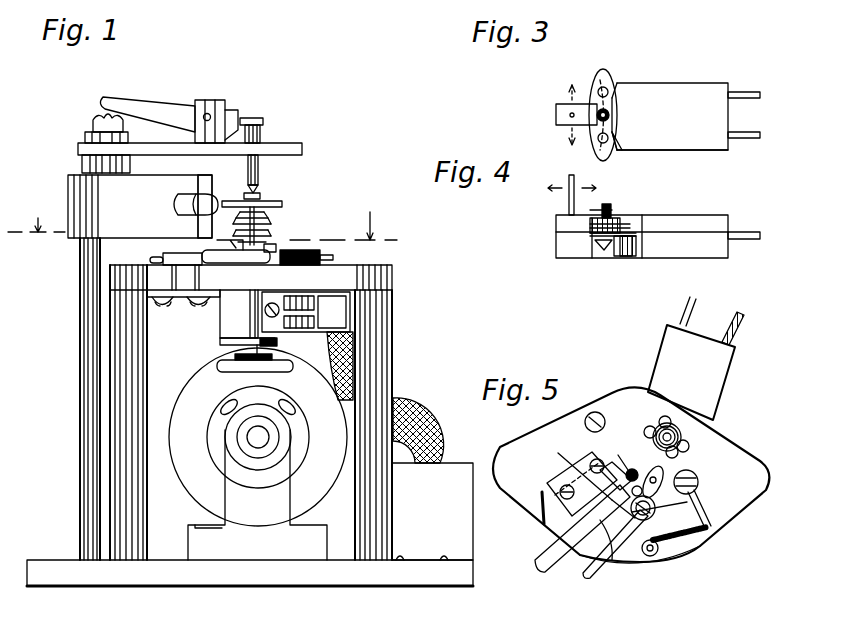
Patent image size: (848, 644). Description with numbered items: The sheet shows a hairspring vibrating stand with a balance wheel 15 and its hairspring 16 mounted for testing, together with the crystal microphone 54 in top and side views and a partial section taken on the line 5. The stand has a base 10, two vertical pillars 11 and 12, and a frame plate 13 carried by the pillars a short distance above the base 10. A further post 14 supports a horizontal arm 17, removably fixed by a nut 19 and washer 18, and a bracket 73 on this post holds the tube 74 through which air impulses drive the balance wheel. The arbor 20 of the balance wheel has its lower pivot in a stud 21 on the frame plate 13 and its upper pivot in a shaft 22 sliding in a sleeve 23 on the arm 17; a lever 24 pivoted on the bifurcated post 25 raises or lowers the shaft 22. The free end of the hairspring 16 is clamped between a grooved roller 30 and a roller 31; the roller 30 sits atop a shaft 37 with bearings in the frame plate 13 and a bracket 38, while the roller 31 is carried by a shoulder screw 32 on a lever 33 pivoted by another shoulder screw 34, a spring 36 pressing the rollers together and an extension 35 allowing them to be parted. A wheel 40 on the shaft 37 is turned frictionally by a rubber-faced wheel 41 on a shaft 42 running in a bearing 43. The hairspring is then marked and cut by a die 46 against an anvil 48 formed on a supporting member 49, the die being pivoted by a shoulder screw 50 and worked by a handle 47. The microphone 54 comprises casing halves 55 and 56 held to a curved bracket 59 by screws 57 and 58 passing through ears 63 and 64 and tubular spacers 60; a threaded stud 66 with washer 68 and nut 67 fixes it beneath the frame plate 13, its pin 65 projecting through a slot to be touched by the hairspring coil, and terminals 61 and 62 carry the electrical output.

In FIG. 1, the section line 5 is at (202, 217).
In FIG. 1, the base 10 is at (313, 580).
In FIG. 1, the vertical pillar 11 is at (140, 402).
In FIG. 1, the vertical pillar 12 is at (378, 418).
In FIG. 1, the frame plate 13 is at (393, 278).
In FIG. 5, the frame plate 13 is at (540, 441).
In FIG. 1, the post 14 is at (86, 420).
In FIG. 1, the balance wheel 15 is at (282, 204).
In FIG. 1, the hairspring 16 is at (270, 228).
In FIG. 1, the horizontal arm 17 is at (287, 148).
In FIG. 1, the washer 18 is at (82, 138).
In FIG. 1, the nut 19 is at (94, 128).
In FIG. 1, the arbor 20 is at (262, 197).
In FIG. 1, the stud 21 is at (235, 232).
In FIG. 5, the stud 21 is at (630, 468).
In FIG. 1, the shaft 22 is at (250, 188).
In FIG. 1, the sleeve 23 is at (258, 176).
In FIG. 1, the lever 24 is at (155, 108).
In FIG. 1, the bifurcated post 25 is at (222, 100).
In FIG. 5, the roller 30 is at (648, 470).
In FIG. 5, the roller 31 is at (648, 522).
In FIG. 5, the shoulder screw 32 is at (655, 512).
In FIG. 5, the lever 33 is at (720, 512).
In FIG. 5, the shoulder screw 34 is at (692, 495).
In FIG. 5, the extension 35 is at (585, 585).
In FIG. 5, the spring 36 is at (678, 536).
In FIG. 1, the shaft 37 is at (250, 308).
In FIG. 1, the bracket 38 is at (218, 312).
In FIG. 1, the wheel 40 is at (225, 367).
In FIG. 1, the wheel 41 is at (200, 482).
In FIG. 1, the shaft 42 is at (255, 437).
In FIG. 1, the bearing 43 is at (197, 546).
In FIG. 5, the marking and cutting die 46 is at (575, 470).
In FIG. 5, the handle 47 is at (540, 578).
In FIG. 5, the anvil 48 is at (618, 468).
In FIG. 5, the supporting member 49 is at (548, 493).
In FIG. 5, the shoulder screw 50 is at (612, 562).
In FIG. 3, the crystal microphone 54 is at (675, 124).
In FIG. 5, the crystal microphone 54 is at (718, 382).
In FIG. 3, the casing half 55 is at (690, 150).
In FIG. 4, the casing half 55 is at (688, 220).
In FIG. 4, the casing half 56 is at (668, 252).
In FIG. 3, the screw 57 is at (595, 142).
In FIG. 4, the screw 57 is at (598, 260).
In FIG. 3, the screw 58 is at (585, 86).
In FIG. 1, the curved bracket 59 is at (327, 257).
In FIG. 3, the curved bracket 59 is at (612, 78).
In FIG. 4, the curved bracket 59 is at (615, 213).
In FIG. 4, the tubular spacer 60 is at (590, 222).
In FIG. 3, the terminal 61 is at (745, 92).
In FIG. 5, the terminal 61 is at (694, 305).
In FIG. 3, the terminal 62 is at (748, 140).
In FIG. 5, the terminal 62 is at (733, 330).
In FIG. 3, the ear 63 is at (618, 150).
In FIG. 4, the ear 63 is at (640, 225).
In FIG. 4, the ear 64 is at (632, 258).
In FIG. 1, the pin 65 is at (276, 247).
In FIG. 3, the pin 65 is at (560, 116).
In FIG. 4, the pin 65 is at (568, 200).
In FIG. 5, the pin 65 is at (686, 470).
In FIG. 3, the threaded stud 66 is at (620, 108).
In FIG. 5, the threaded stud 66 is at (683, 437).
In FIG. 5, the nut 67 is at (658, 428).
In FIG. 5, the washer 68 is at (686, 427).
In FIG. 1, the bracket 73 is at (70, 187).
In FIG. 1, the tube 74 is at (192, 200).